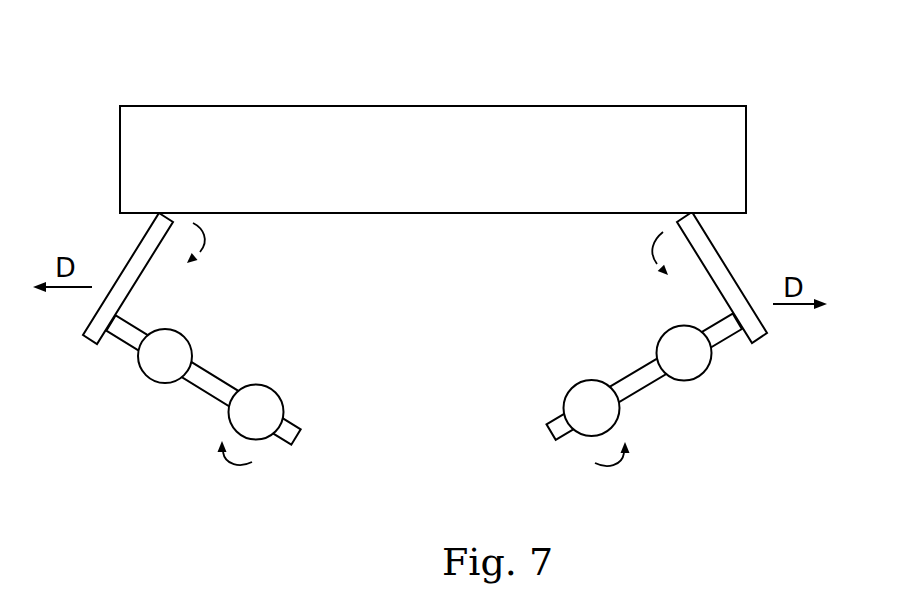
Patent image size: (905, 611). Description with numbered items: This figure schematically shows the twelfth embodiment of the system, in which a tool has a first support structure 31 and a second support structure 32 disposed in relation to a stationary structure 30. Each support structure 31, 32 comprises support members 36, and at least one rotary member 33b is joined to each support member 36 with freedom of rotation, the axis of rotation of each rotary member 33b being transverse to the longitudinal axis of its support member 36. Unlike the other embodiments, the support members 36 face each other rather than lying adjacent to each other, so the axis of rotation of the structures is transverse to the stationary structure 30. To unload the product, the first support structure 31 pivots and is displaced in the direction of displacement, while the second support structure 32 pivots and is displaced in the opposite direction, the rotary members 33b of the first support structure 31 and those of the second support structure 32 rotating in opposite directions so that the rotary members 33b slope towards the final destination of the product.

The stationary structure 30 is at (377, 133).
The first support structure 31 is at (130, 260).
The second support structure 32 is at (732, 270).
The rotary members 33b is at (165, 362).
The support members 36 is at (221, 407).